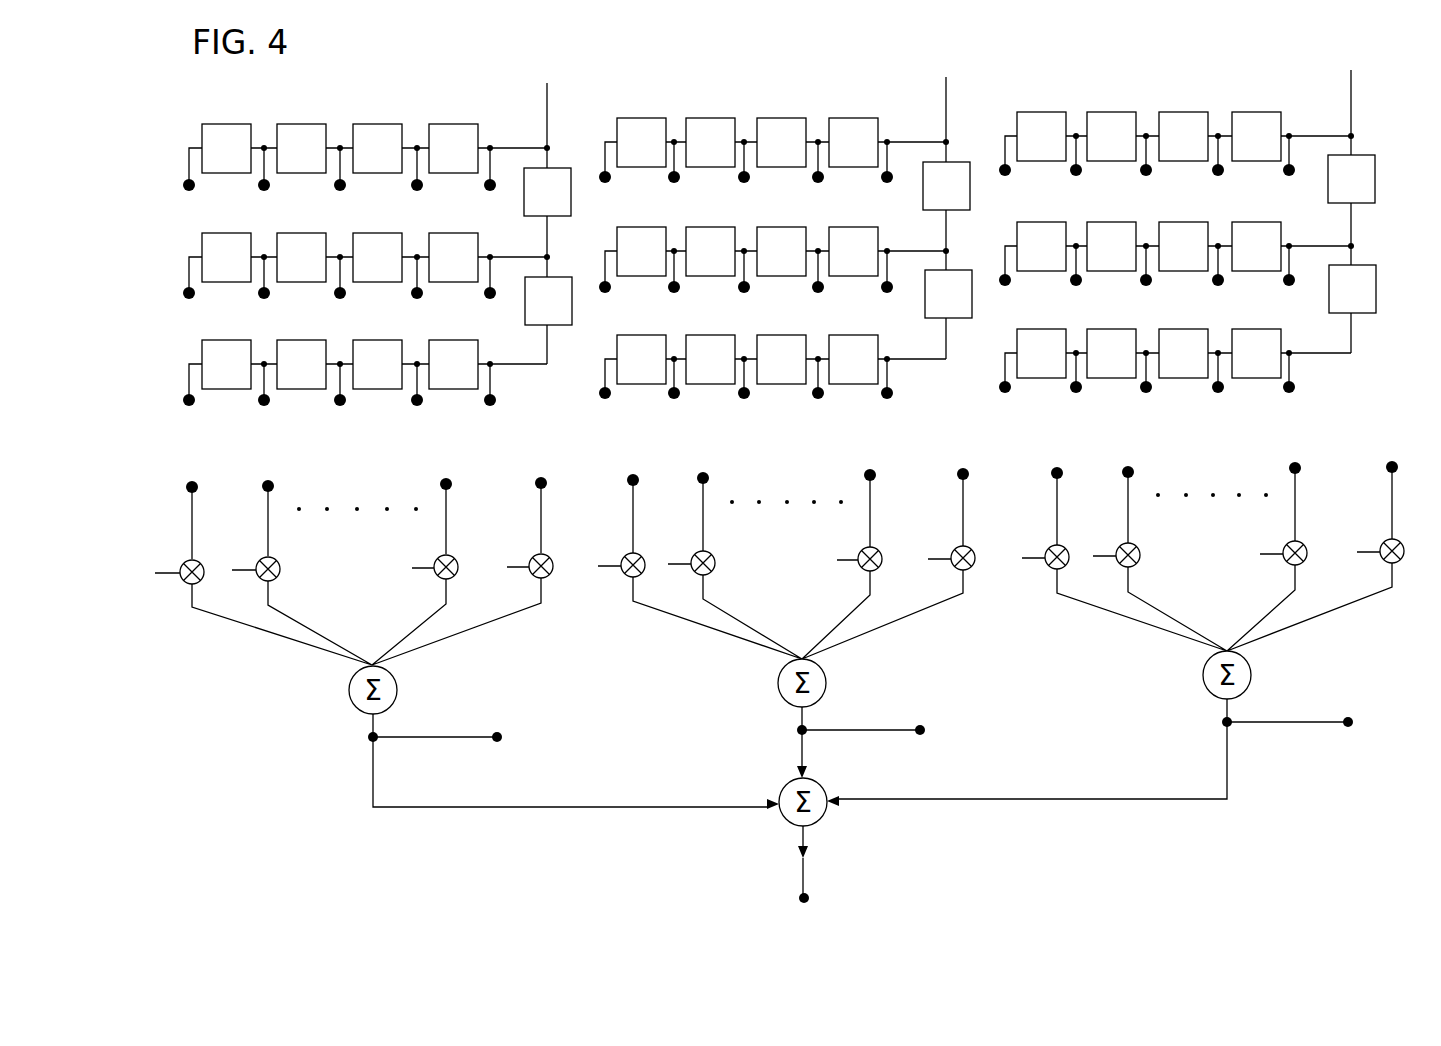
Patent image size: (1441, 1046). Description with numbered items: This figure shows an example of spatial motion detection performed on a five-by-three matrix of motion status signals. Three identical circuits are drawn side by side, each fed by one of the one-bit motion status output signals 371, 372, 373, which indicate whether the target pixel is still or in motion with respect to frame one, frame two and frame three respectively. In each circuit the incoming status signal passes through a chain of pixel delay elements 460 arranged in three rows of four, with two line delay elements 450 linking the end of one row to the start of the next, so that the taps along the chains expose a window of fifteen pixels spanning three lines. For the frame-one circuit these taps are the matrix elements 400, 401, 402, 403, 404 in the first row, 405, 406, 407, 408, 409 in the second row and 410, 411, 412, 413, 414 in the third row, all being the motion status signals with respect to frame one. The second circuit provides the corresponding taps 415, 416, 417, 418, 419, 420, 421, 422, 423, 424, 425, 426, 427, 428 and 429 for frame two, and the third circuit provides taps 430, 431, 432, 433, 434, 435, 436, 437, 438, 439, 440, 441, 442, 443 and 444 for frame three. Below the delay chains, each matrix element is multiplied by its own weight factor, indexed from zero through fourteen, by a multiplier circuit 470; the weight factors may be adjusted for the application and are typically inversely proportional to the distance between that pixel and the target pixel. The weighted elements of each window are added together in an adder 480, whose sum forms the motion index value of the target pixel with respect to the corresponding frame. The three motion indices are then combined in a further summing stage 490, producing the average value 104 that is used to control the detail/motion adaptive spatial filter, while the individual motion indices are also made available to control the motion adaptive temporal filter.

The output signal 371 is at (565, 214).
The output signal 372 is at (964, 209).
The output signal 373 is at (1370, 203).
The matrix element 400 is at (188, 353).
The matrix element 401 is at (264, 350).
The matrix element 402 is at (336, 179).
The matrix element 403 is at (413, 179).
The matrix element 404 is at (486, 179).
The matrix element 405 is at (185, 289).
The matrix element 406 is at (260, 288).
The matrix element 407 is at (336, 288).
The matrix element 408 is at (413, 288).
The matrix element 409 is at (486, 288).
The matrix element 410 is at (185, 396).
The matrix element 411 is at (260, 395).
The matrix element 412 is at (336, 395).
The matrix element 413 is at (429, 457).
The matrix element 414 is at (513, 457).
The tap signal 415 is at (617, 347).
The tap signal 416 is at (686, 345).
The tap signal 417 is at (740, 172).
The tap signal 418 is at (814, 172).
The tap signal 419 is at (883, 172).
The tap signal 420 is at (601, 283).
The tap signal 421 is at (670, 282).
The tap signal 422 is at (740, 282).
The tap signal 423 is at (814, 282).
The tap signal 424 is at (883, 282).
The tap signal 425 is at (601, 390).
The tap signal 426 is at (670, 389).
The tap signal 427 is at (740, 389).
The tap signal 428 is at (842, 451).
The tap signal 429 is at (923, 451).
The tap signal 430 is at (1029, 340).
The tap signal 431 is at (1100, 338).
The tap signal 432 is at (1142, 166).
The tap signal 433 is at (1214, 166).
The tap signal 434 is at (1285, 166).
The tap signal 435 is at (1001, 277).
The tap signal 436 is at (1072, 276).
The tap signal 437 is at (1142, 276).
The tap signal 438 is at (1214, 276).
The tap signal 439 is at (1285, 276).
The tap signal 440 is at (1001, 384).
The tap signal 441 is at (1072, 383).
The tap signal 442 is at (1142, 383).
The tap signal 443 is at (1254, 445).
The tap signal 444 is at (1338, 444).
The line delay element 450 is at (950, 240).
The pixel delay element 460 is at (741, 250).
The multiplier circuit 470 is at (791, 561).
The adder 480 is at (792, 650).
The adder 490 is at (800, 790).
The average of motion indices 104 is at (830, 885).